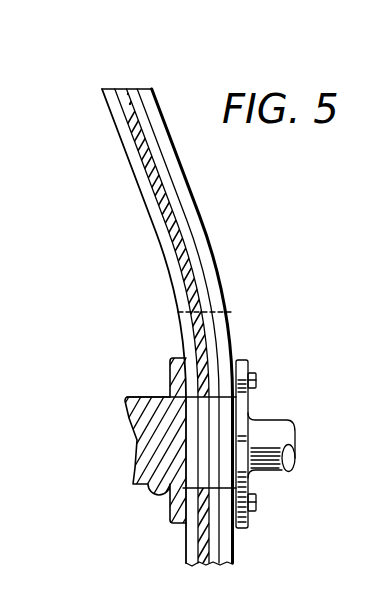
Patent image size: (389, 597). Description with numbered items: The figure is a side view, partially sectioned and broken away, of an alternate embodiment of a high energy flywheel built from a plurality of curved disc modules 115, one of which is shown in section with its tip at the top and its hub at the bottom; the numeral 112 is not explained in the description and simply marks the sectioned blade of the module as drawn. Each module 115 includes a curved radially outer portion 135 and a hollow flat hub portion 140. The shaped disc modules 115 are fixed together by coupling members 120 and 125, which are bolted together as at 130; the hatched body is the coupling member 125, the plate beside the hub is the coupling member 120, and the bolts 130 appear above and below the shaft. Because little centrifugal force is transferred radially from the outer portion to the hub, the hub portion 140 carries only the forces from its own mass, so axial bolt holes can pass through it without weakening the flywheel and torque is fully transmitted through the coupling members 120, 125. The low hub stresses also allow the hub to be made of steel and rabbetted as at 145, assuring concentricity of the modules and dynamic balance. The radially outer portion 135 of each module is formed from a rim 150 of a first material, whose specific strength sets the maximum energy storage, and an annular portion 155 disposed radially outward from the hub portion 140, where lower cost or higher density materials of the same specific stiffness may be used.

The blade 112 is at (197, 190).
The curved disc module 115 is at (143, 88).
The coupling member 120 is at (245, 413).
The coupling member 125 is at (137, 479).
The bolt 130 is at (257, 379).
The curved radially outer portion 135 is at (107, 100).
The hollow flat hub portion 140 is at (192, 387).
The rabbetting 145 is at (192, 368).
The rim 150 is at (133, 117).
The annular portion 155 is at (167, 205).